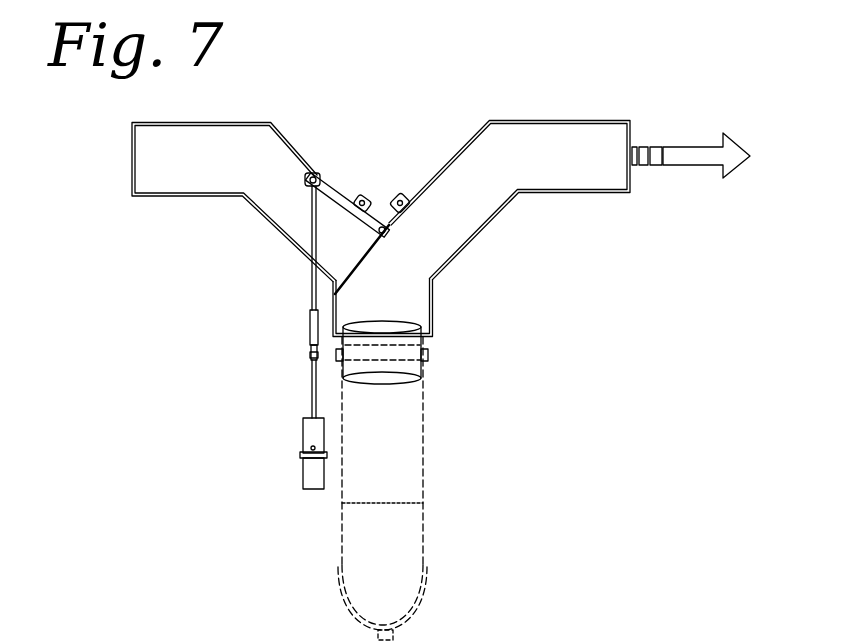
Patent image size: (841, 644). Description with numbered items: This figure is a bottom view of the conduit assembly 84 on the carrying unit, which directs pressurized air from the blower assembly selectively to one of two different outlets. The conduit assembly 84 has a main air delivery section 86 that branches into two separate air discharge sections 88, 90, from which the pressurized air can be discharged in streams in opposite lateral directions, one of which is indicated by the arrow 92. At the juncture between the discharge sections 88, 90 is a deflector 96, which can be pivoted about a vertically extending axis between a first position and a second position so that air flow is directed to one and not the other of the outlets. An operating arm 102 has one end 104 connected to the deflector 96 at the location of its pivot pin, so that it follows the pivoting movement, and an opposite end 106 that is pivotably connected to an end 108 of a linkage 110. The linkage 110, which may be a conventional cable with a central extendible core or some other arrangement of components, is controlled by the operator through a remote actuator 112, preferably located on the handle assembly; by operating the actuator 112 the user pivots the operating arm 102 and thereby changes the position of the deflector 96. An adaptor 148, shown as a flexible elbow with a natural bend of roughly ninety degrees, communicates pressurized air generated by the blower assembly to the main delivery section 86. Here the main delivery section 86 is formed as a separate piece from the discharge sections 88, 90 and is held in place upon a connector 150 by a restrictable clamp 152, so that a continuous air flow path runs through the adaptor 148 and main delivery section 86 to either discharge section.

The conduit assembly 84 is at (418, 128).
The main air delivery section 86 is at (403, 452).
The air discharge section 88 is at (560, 135).
The air discharge section 90 is at (253, 130).
The arrow 92 is at (683, 153).
The deflector 96 is at (368, 255).
The operating arm 102 is at (338, 197).
The end 104 is at (378, 214).
The opposite end 106 is at (327, 196).
The end 108 is at (305, 196).
The linkage 110 is at (312, 354).
The remote actuator 112 is at (315, 458).
The adaptor 148 is at (395, 543).
The connector 150 is at (405, 366).
The restrictable clamp 152 is at (430, 352).